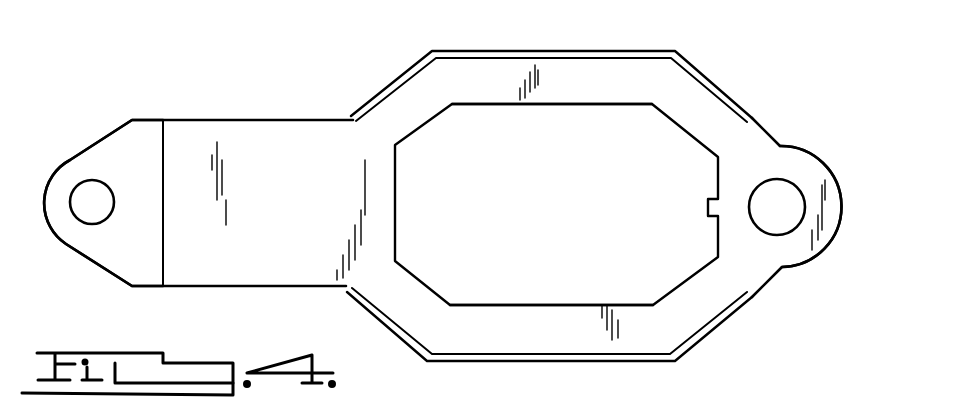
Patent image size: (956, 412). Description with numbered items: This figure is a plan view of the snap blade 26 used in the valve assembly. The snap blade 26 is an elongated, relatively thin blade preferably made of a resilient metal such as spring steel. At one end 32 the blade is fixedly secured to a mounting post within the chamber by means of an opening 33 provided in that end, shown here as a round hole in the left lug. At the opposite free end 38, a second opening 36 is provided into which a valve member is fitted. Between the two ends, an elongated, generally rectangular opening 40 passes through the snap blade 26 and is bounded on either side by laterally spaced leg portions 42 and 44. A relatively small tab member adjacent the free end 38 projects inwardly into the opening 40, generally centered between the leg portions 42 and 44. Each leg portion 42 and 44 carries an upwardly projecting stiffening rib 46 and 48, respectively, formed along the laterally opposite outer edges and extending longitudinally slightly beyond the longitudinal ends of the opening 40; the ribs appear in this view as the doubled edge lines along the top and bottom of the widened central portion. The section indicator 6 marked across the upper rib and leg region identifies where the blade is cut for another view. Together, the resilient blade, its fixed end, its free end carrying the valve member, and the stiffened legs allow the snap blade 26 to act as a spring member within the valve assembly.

The snap blade 26 is at (330, 92).
The end of snap blade 32 is at (142, 133).
The opening 33 is at (82, 192).
The opening 36 is at (797, 200).
The free end 38 is at (800, 167).
The rectangular shaped opening 40 is at (546, 212).
The leg portion 42 is at (477, 88).
The leg portion 44 is at (470, 325).
The stiffening rib 46 is at (458, 50).
The stiffening rib 48 is at (592, 363).
The section line 6- 6 is at (634, 41).